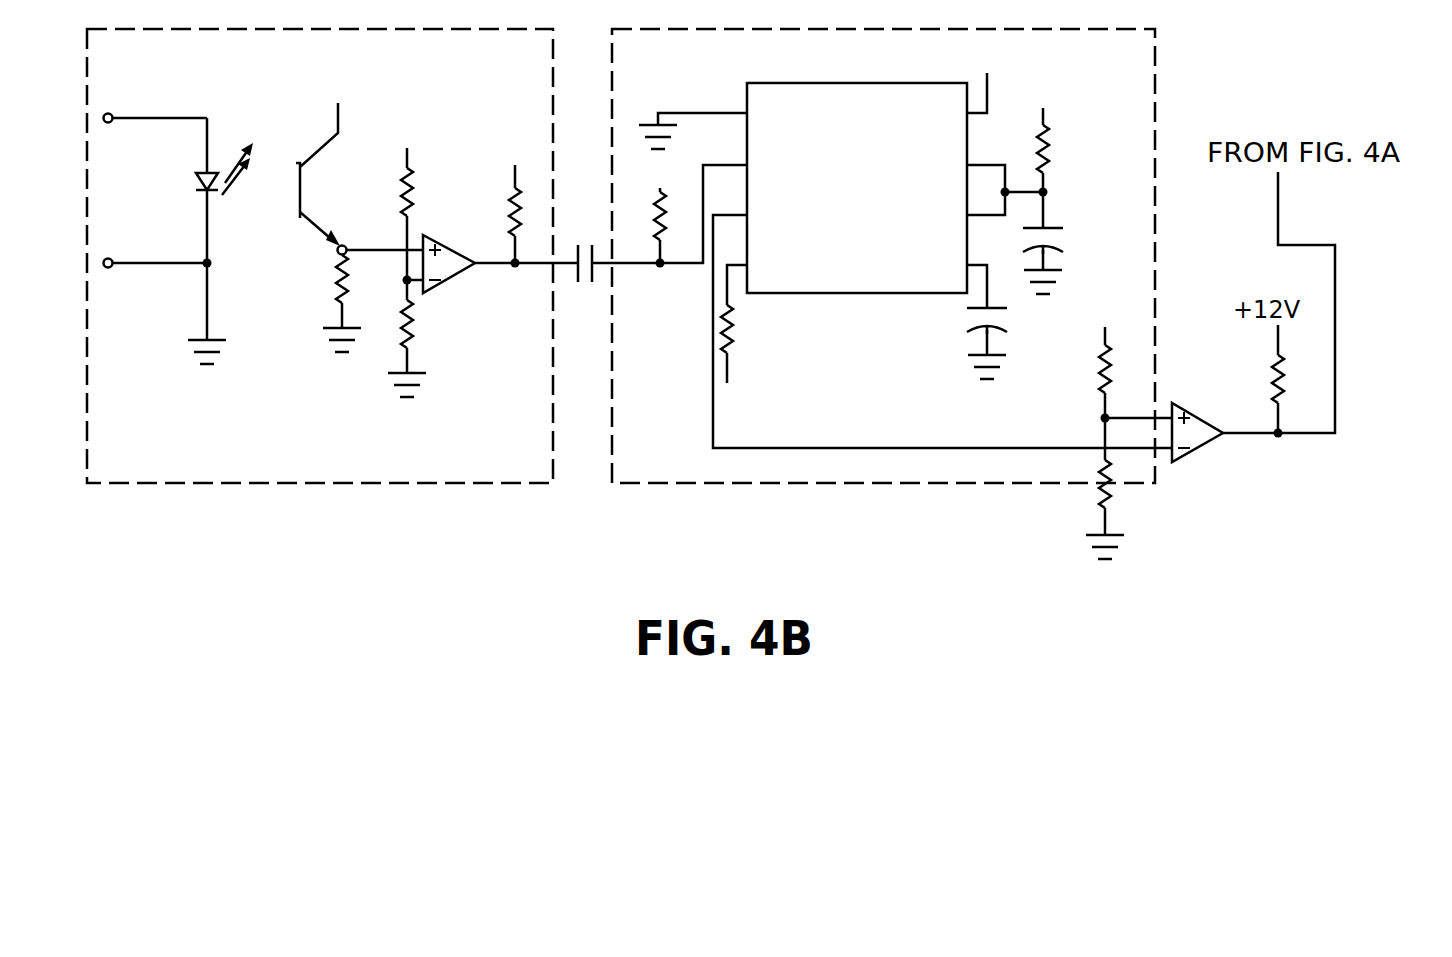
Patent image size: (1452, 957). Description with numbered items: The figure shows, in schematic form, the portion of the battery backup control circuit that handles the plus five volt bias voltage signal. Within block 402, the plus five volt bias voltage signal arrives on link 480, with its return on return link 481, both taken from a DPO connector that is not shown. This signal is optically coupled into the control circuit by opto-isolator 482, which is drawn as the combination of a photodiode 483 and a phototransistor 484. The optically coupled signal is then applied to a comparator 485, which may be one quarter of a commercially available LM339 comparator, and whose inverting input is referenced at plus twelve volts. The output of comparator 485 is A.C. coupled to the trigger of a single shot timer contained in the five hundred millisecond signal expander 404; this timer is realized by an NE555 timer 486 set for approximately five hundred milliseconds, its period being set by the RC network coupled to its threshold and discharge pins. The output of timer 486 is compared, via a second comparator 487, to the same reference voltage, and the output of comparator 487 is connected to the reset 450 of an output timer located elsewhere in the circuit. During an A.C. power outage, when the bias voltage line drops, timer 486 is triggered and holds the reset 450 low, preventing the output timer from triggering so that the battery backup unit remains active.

The block 402 is at (270, 485).
The 500 millisecond signal expander 404 is at (770, 485).
The reset 450 is at (1335, 390).
The link 480 is at (183, 119).
The return link 481 is at (178, 262).
The opto-isolator 482 is at (268, 270).
The photodiode 483 is at (196, 180).
The phototransistor 484 is at (337, 148).
The comparator 485 is at (455, 282).
The timer 486 is at (845, 83).
The comparator 487 is at (1207, 440).